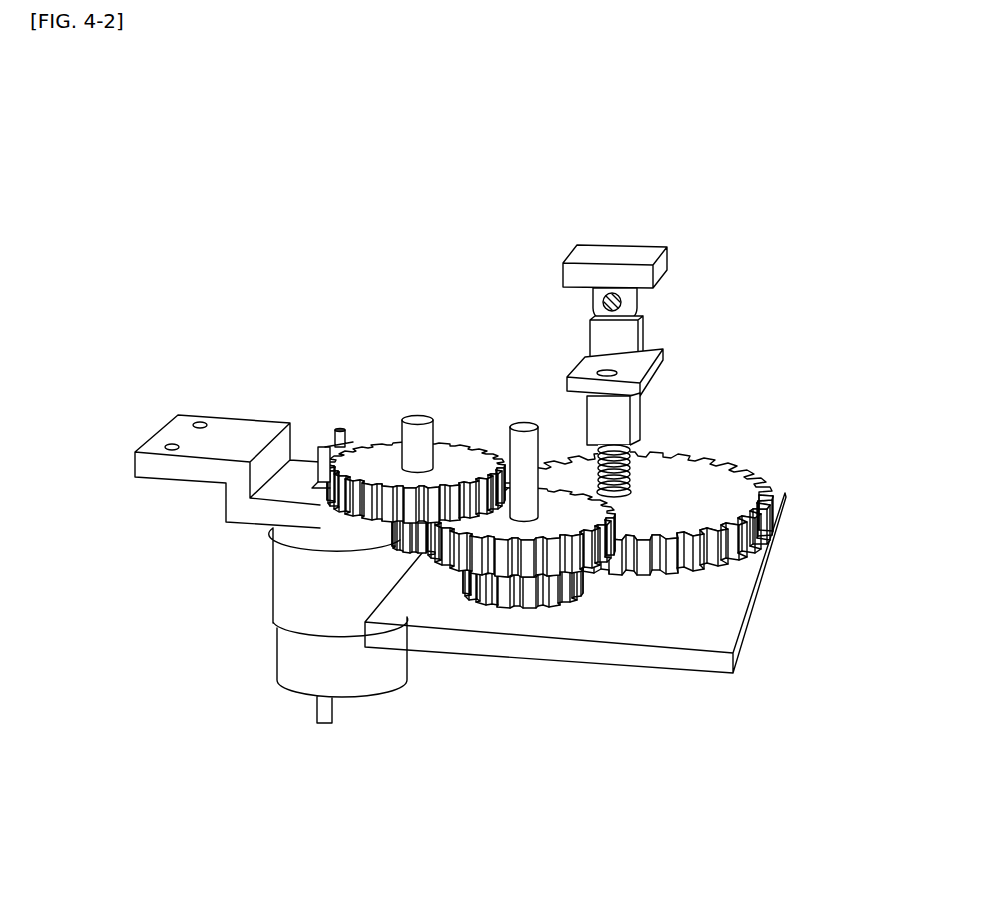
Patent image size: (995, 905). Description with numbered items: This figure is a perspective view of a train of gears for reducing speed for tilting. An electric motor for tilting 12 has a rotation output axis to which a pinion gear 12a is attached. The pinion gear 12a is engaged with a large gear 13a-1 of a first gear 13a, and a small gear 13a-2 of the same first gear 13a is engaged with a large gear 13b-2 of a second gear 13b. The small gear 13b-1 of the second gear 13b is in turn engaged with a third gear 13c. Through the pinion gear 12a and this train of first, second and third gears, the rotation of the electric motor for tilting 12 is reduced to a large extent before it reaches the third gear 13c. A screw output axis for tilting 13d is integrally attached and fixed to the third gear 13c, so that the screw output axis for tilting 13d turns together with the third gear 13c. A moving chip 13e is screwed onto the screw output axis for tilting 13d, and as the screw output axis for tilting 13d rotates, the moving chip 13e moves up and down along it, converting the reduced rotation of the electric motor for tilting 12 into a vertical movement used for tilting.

The electric motor for tilting 12 is at (310, 665).
The pinion gear 12a is at (320, 453).
The first gear 13a is at (291, 529).
The large gear of the first gear 13a-1 is at (337, 517).
The small gear of the first gear 13a-2 is at (403, 542).
The second gear 13b is at (583, 601).
The small gear of the second gear 13b-1 is at (467, 590).
The large gear of the second gear 13b-2 is at (487, 594).
The third gear 13c is at (703, 510).
The screw output axis for tilting 13d is at (628, 462).
The moving chip 13e is at (622, 348).